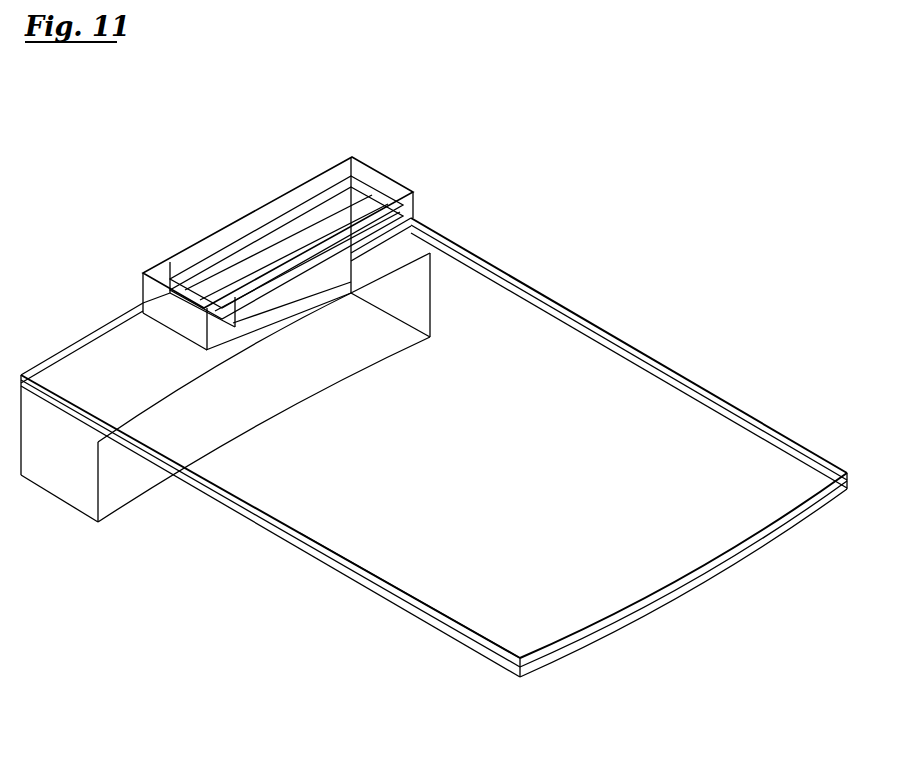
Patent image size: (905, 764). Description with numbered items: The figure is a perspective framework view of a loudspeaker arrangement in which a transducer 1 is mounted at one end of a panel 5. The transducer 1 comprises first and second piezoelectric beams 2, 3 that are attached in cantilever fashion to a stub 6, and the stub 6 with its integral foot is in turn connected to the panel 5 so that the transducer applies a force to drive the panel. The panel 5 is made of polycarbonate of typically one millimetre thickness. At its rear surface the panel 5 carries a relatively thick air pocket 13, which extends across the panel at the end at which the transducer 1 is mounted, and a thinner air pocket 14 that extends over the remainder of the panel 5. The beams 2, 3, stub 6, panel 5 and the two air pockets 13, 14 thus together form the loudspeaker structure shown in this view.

The transducer 1 is at (708, 183).
The first piezoelectric beam 2 is at (413, 217).
The second piezoelectric beam 3 is at (355, 155).
The panel 5 is at (703, 422).
The stub 6 is at (150, 306).
The air pocket 13 is at (80, 487).
The air pocket 14 is at (371, 598).